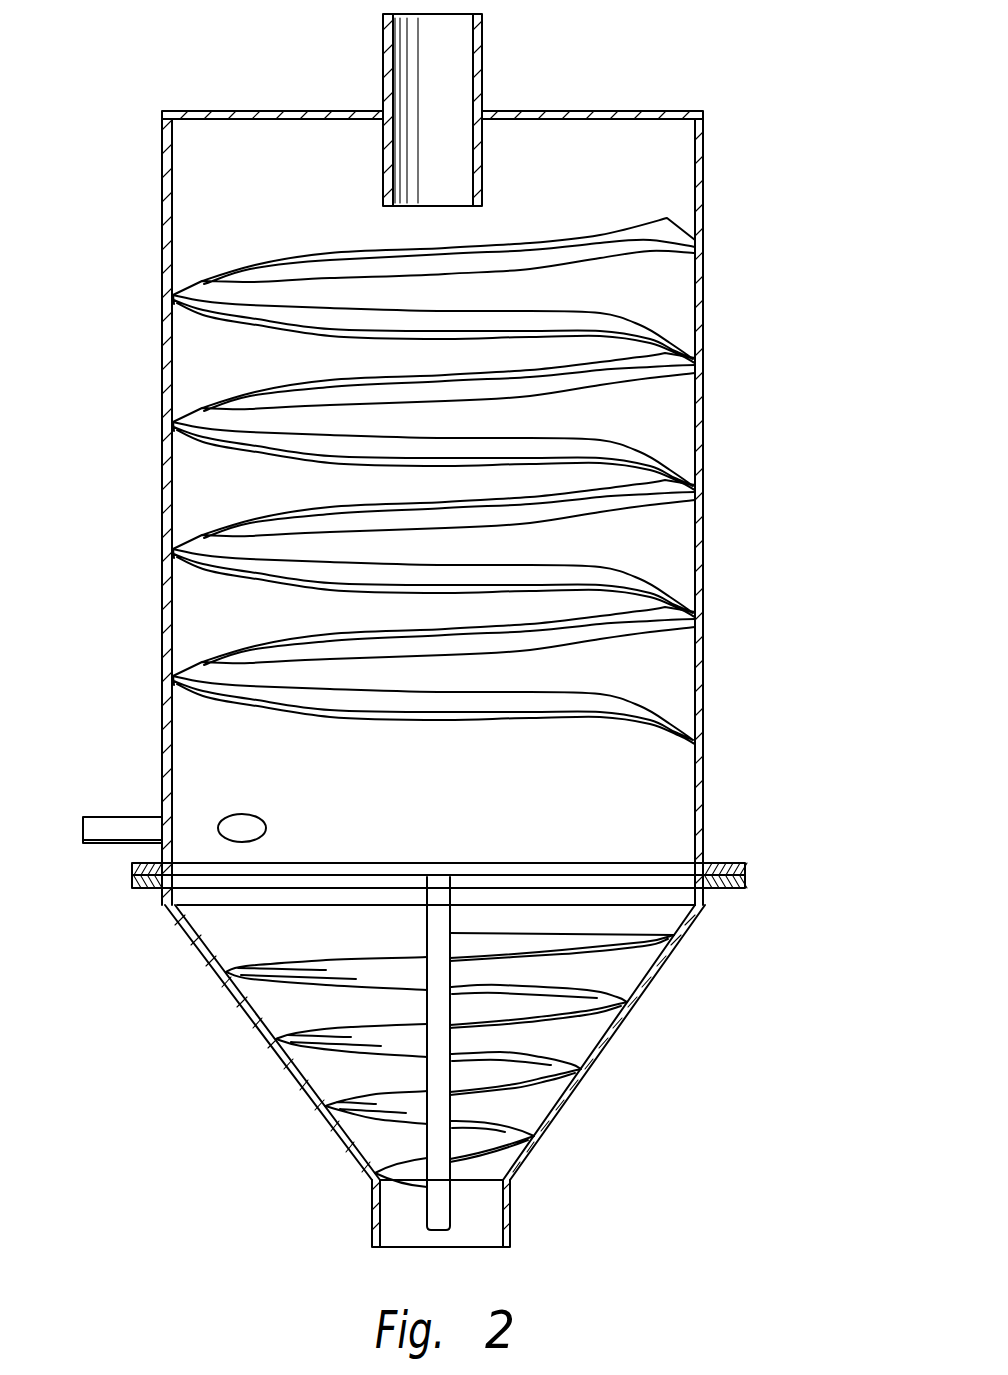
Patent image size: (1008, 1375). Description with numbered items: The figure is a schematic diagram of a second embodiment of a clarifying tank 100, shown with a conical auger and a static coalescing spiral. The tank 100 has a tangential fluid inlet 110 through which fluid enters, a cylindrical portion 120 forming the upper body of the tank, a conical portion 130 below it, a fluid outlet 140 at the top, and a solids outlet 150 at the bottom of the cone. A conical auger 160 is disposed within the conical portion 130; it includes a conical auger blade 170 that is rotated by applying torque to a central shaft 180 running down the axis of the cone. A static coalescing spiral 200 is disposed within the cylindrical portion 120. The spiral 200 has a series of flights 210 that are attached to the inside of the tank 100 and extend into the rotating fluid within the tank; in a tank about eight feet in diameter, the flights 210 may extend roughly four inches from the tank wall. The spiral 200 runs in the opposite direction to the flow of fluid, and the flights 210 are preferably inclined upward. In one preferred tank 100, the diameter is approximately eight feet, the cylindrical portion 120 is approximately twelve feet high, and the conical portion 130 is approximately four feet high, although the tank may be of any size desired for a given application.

The clarifying tank 100 is at (469, 630).
The tangential fluid inlet 110 is at (119, 815).
The cylindrical portion 120 is at (707, 764).
The conical portion 130 is at (603, 1047).
The fluid outlet 140 is at (483, 50).
The solids outlet 150 is at (512, 1205).
The conical auger 160 is at (475, 1060).
The conical auger blade 170 is at (614, 1004).
The central shaft 180 is at (427, 925).
The static coalescing spiral 200 is at (233, 263).
The flights 210 is at (195, 297).